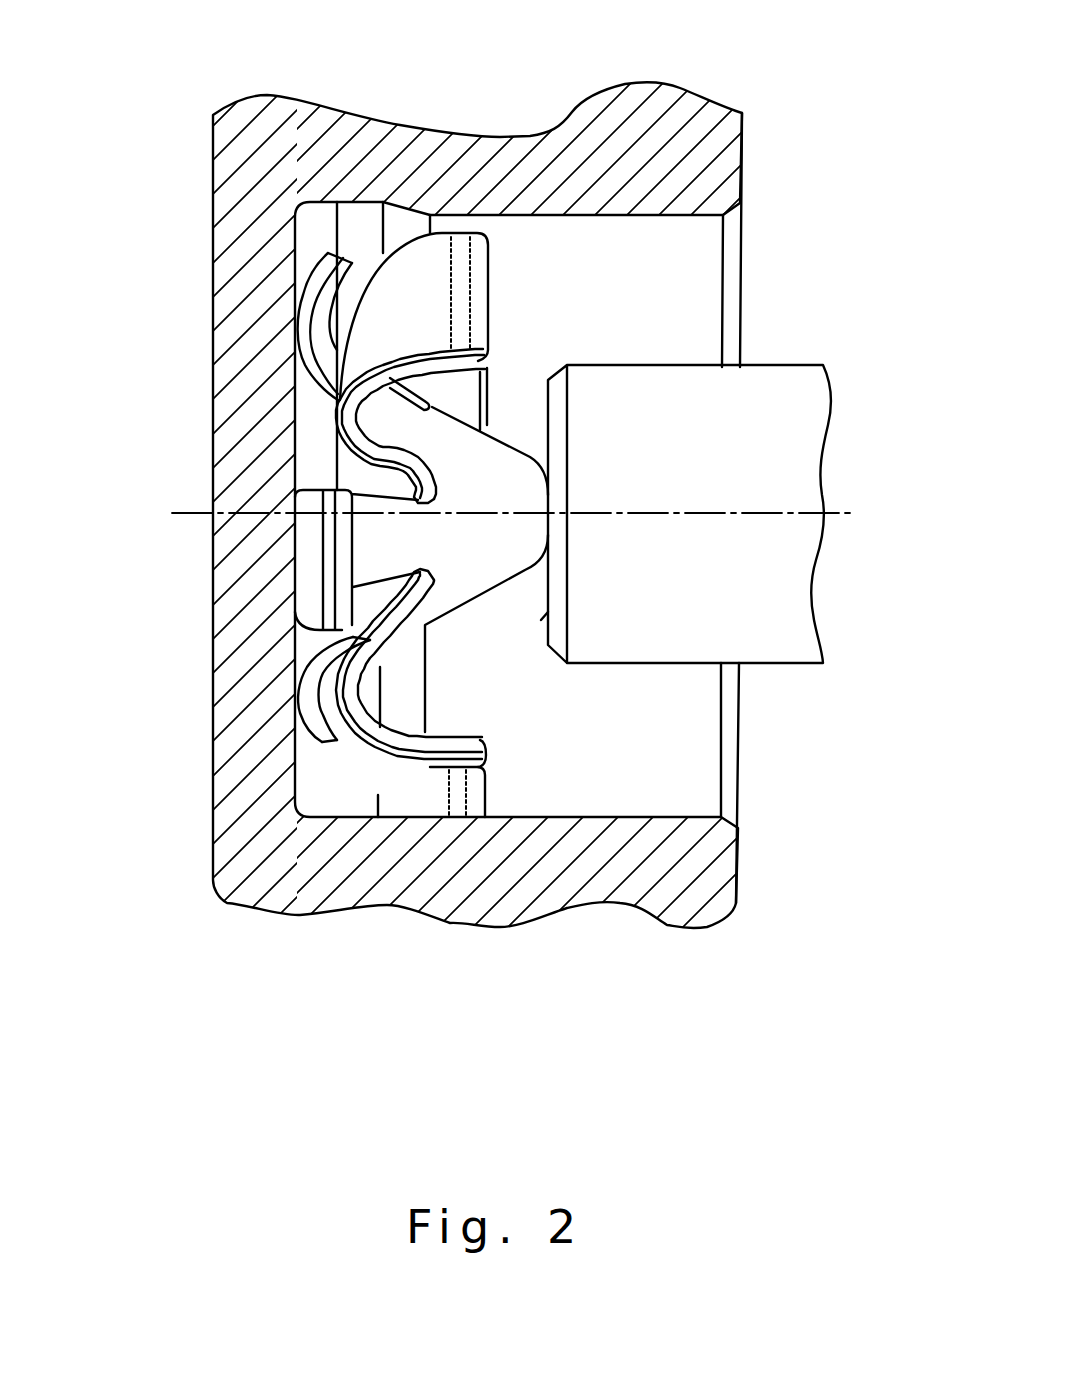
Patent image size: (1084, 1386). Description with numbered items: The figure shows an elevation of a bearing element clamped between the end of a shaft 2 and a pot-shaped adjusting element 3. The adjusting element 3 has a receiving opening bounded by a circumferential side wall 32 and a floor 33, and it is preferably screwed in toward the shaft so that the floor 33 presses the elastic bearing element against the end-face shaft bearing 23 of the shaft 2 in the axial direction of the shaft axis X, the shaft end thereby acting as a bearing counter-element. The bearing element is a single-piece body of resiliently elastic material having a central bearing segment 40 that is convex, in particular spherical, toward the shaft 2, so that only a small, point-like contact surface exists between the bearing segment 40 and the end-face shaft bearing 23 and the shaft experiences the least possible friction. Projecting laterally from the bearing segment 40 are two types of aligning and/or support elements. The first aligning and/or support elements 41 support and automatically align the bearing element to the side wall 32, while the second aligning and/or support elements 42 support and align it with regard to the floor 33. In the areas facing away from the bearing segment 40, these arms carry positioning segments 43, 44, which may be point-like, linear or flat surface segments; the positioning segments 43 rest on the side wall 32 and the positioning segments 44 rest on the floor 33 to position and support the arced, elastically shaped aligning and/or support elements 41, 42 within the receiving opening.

The shaft 2 is at (710, 578).
The adjusting element 3 is at (323, 160).
The end-face shaft bearing 23 is at (548, 612).
The side wall 32 is at (527, 213).
The floor 33 is at (313, 443).
The central bearing segment 40 is at (548, 513).
The first aligning and/or support element 41 is at (490, 325).
The second aligning and/or support element 42 is at (313, 540).
The positioning segment 43 is at (472, 286).
The positioning segment 44 is at (305, 318).
The shaft axis X is at (845, 511).